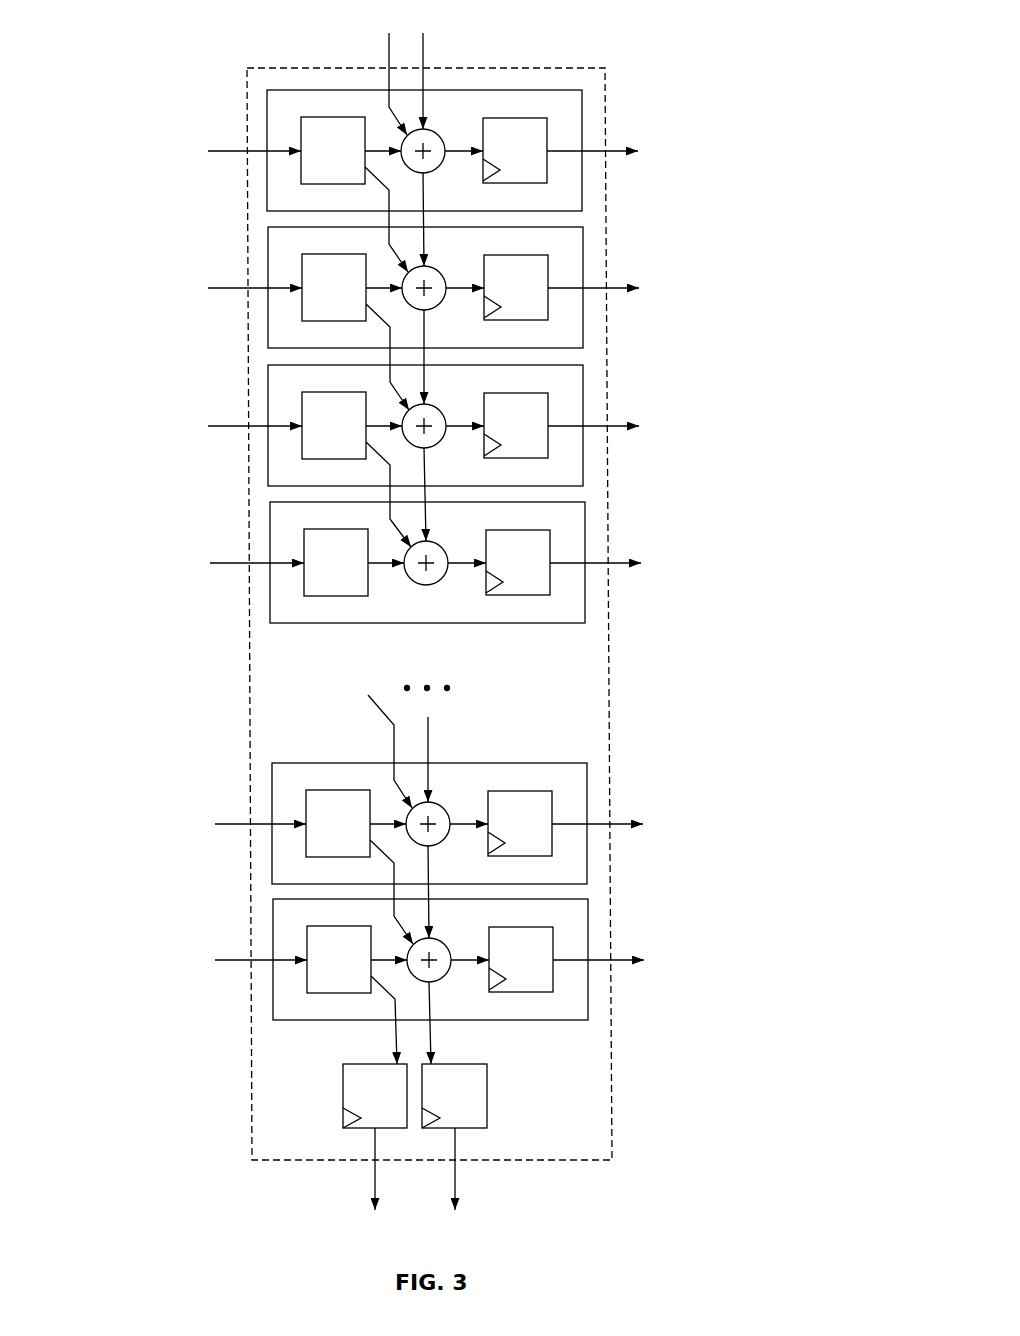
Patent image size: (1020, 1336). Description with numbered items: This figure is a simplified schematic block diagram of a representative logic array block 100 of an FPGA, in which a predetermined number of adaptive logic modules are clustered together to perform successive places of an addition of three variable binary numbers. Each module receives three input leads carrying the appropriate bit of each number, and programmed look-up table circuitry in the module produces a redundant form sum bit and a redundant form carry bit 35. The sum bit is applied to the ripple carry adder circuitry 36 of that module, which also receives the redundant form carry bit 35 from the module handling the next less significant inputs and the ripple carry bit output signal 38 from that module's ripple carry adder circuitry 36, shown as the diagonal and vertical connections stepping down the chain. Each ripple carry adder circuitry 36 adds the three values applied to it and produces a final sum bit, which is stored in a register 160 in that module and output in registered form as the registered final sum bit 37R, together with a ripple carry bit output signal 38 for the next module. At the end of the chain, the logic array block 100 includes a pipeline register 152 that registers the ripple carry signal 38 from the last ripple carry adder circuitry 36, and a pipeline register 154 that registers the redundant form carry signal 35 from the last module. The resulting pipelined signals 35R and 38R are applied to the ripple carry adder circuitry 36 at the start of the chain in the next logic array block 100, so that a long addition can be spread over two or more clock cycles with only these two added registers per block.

The logic array block 100 is at (605, 100).
The redundant form carry bit 35 is at (397, 1032).
The pipelined redundant form carry signal 35R is at (387, 43).
The ripple carry adder circuitry 36 is at (427, 585).
The registered final sum bit 37R is at (607, 153).
The ripple carry bit output signal 38 is at (433, 1032).
The pipelined ripple carry signal 38R is at (425, 43).
The pipeline register 152 is at (487, 1097).
The pipeline register 154 is at (343, 1097).
The register 160 is at (513, 117).